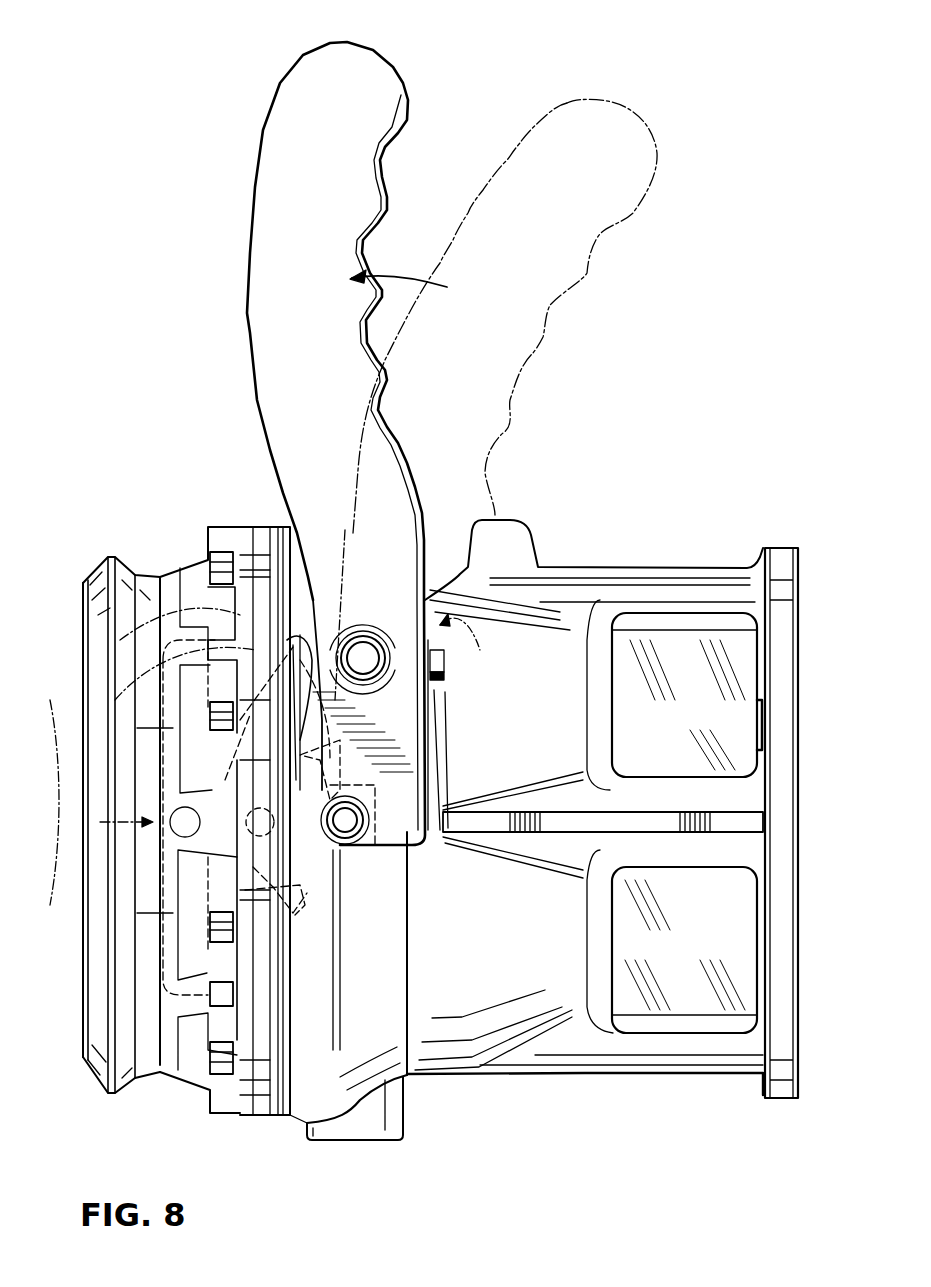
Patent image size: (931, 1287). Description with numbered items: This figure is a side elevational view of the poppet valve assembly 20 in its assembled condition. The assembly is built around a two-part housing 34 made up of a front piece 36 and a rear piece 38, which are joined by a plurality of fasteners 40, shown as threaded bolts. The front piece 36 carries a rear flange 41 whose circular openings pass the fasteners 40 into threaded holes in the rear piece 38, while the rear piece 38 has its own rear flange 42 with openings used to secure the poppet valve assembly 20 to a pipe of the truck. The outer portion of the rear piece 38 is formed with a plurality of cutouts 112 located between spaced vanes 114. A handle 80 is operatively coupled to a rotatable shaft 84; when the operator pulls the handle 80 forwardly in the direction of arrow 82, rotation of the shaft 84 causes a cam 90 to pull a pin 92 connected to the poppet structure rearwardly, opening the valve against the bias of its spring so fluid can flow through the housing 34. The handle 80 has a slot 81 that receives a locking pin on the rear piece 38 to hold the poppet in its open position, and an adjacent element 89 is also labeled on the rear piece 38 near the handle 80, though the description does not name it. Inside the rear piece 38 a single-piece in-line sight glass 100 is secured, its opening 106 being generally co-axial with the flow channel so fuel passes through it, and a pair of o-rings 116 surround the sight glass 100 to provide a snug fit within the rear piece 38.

The poppet valve assembly 20 is at (92, 378).
The two-part housing 34 is at (215, 486).
The front piece 36 is at (128, 568).
The rear piece 38 is at (583, 568).
The fasteners 40 is at (222, 568).
The rear flange 41 is at (258, 527).
The rear flange 42 is at (778, 548).
The handle 80 is at (384, 170).
The slot 81 is at (365, 810).
The arrow 82 is at (398, 277).
The rotatable shaft 84 is at (372, 650).
The cam tab 89 is at (445, 665).
The cam 90 is at (300, 918).
The pin 92 is at (280, 848).
The in-line sight glass 100 is at (722, 716).
The opening 106 is at (678, 735).
The cutouts 112 is at (582, 710).
The vanes 114 is at (683, 582).
The o-rings 116 is at (290, 650).